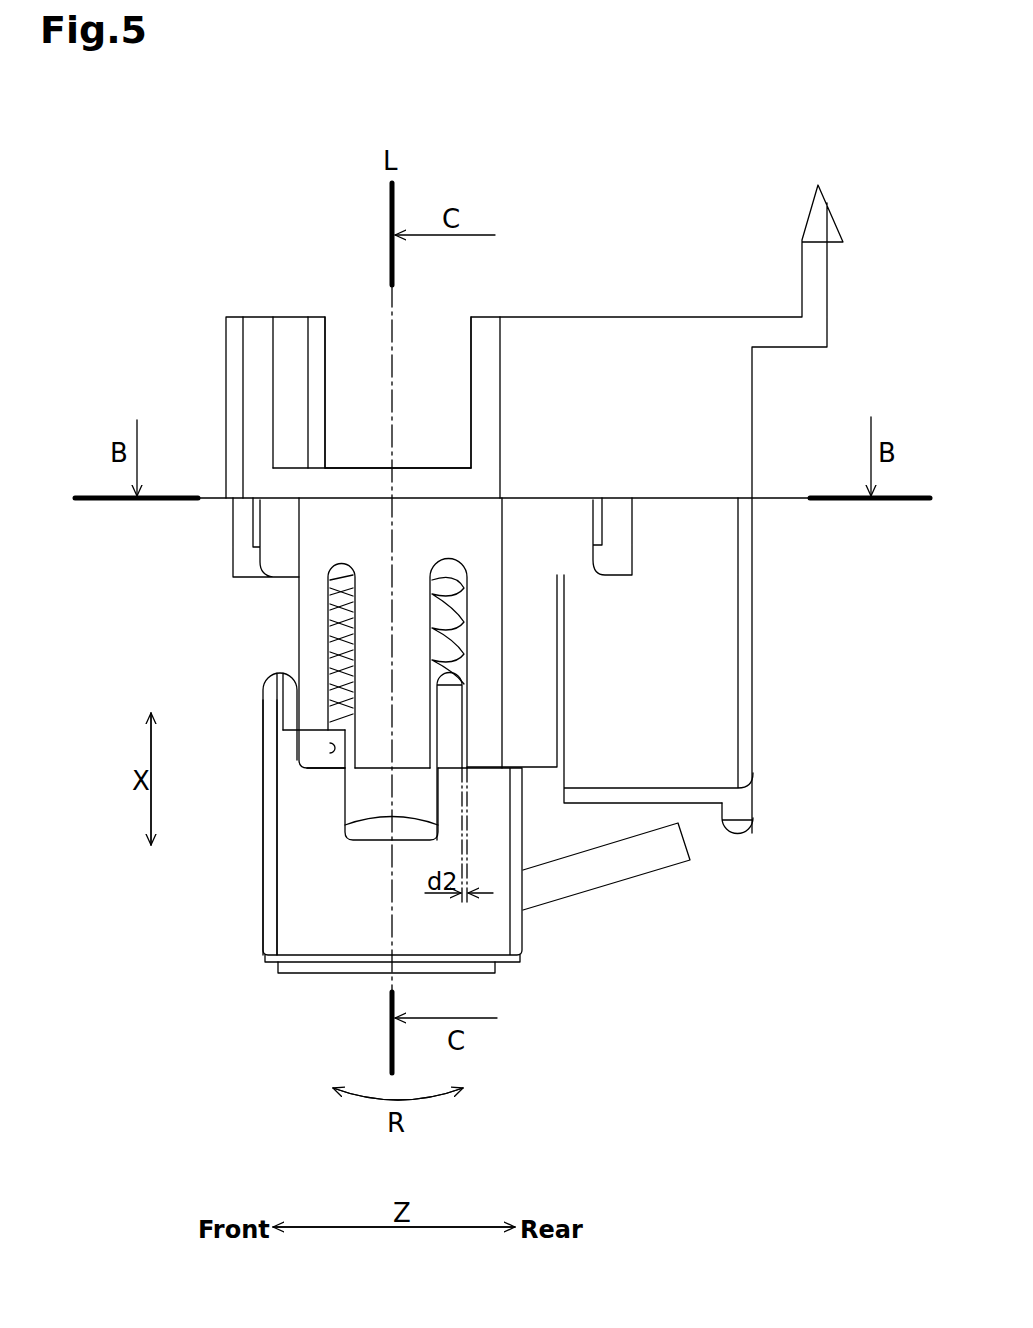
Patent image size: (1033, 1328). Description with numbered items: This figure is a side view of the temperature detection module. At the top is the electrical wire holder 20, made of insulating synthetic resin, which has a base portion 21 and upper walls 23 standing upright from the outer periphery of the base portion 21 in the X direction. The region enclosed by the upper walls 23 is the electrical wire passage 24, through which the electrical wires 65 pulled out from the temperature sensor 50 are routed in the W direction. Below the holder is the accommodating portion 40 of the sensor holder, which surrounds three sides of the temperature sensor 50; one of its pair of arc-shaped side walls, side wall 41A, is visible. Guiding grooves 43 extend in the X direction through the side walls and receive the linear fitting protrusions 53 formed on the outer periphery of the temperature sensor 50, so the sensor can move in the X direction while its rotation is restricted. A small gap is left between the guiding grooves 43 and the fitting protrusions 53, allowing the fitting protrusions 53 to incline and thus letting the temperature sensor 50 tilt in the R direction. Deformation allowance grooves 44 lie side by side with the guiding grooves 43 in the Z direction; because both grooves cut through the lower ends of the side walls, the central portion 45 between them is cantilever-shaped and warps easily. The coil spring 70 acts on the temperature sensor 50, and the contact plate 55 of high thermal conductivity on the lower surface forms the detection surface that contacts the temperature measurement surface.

The electrical wire holder 20 is at (217, 405).
The base portion 21 is at (350, 480).
The upper walls 23 is at (257, 333).
The electrical wire passage 24 is at (440, 450).
The accommodating portion 40 is at (658, 666).
The side wall 41A is at (297, 590).
The guiding grooves 43 is at (462, 632).
The deformation allowance grooves 44 is at (330, 753).
The central portion 45 is at (373, 713).
The temperature sensor 50 is at (303, 886).
The fitting protrusions 53 is at (455, 712).
The contact plate 55 is at (311, 972).
The electrical wires 65 is at (623, 862).
The coil spring 70 is at (340, 612).